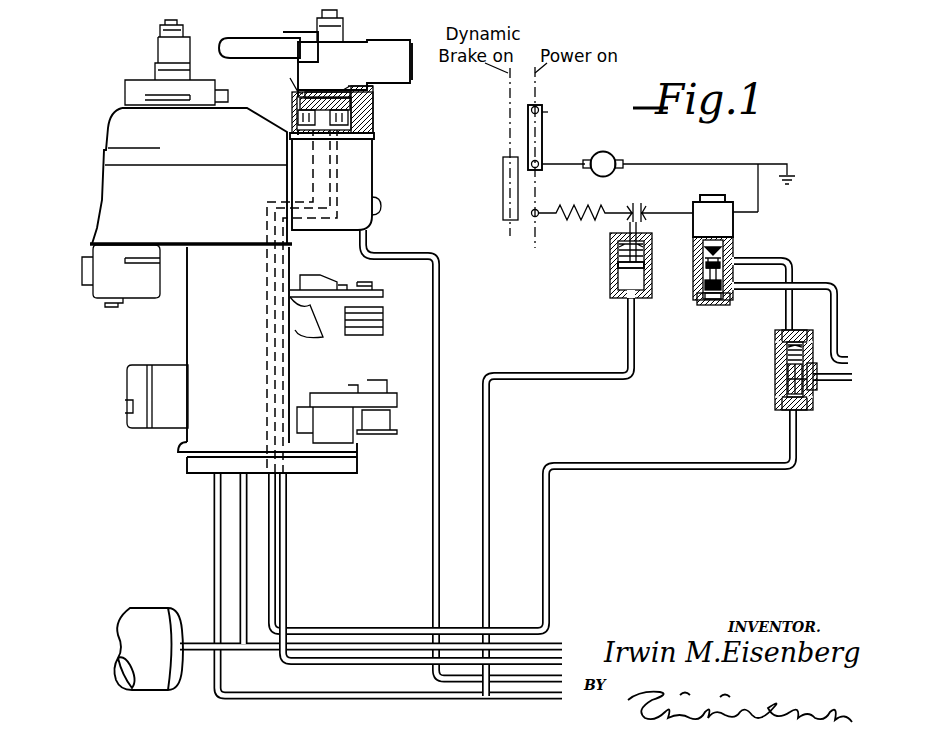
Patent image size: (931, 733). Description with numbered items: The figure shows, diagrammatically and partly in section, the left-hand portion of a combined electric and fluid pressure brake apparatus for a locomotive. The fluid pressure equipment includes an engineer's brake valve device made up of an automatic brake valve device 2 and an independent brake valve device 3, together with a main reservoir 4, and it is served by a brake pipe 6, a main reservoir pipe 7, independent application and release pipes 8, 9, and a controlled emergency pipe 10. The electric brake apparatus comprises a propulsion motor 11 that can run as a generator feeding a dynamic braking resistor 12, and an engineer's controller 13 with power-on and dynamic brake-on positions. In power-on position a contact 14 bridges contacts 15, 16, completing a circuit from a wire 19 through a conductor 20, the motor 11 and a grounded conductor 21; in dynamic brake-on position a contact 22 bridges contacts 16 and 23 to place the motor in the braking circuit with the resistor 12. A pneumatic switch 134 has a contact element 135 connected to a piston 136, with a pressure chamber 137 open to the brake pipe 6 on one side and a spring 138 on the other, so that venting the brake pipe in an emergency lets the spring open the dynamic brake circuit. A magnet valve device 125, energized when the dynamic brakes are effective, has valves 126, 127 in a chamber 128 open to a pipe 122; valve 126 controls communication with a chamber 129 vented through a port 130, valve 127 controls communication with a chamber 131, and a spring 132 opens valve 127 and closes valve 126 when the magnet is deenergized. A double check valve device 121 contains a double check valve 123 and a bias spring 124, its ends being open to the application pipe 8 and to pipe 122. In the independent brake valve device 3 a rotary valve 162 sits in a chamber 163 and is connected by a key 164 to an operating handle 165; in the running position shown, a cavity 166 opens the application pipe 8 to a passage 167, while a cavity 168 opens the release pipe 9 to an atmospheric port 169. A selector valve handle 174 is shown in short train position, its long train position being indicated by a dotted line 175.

The automatic brake valve device 2 is at (116, 120).
The independent brake valve device 3 is at (358, 40).
The main reservoir 4 is at (168, 612).
The brake pipe 6 is at (452, 699).
The main reservoir pipe 7 is at (355, 645).
The independent application pipe 8 is at (553, 630).
The independent release pipe 9 is at (560, 650).
The controlled emergency pipe 10 is at (523, 682).
The propulsion motor 11 is at (606, 152).
The dynamic braking resistor 12 is at (574, 211).
The engineer's controller 13 is at (519, 88).
The contact 14 is at (542, 130).
The contact 15 is at (541, 106).
The contact 16 is at (541, 170).
The wire 19 is at (548, 112).
The conductor 20 is at (563, 152).
The grounded conductor 21 is at (745, 163).
The contact 22 is at (503, 182).
The contact 23 is at (533, 220).
The double check valve device 121 is at (775, 368).
The pipe 122 is at (787, 319).
The double check valve 123 is at (782, 388).
The bias spring 124 is at (782, 352).
The magnet valve device 125 is at (728, 202).
The valve 126 is at (735, 274).
The valve 127 is at (790, 320).
The chamber 128 is at (703, 279).
The chamber 129 is at (735, 257).
The port 130 is at (703, 263).
The chamber 131 is at (703, 295).
The spring 132 is at (711, 301).
The pneumatic switch 134 is at (622, 284).
The contact element 135 is at (637, 208).
The piston 136 is at (618, 266).
The pressure chamber 137 is at (612, 295).
The spring 138 is at (610, 244).
The rotary valve 162 is at (374, 103).
The rotary valve chamber 163 is at (374, 120).
The key 164 is at (334, 92).
The operating handle 165 is at (252, 45).
The cavity 166 is at (297, 98).
The passage 167 is at (297, 120).
The cavity 168 is at (357, 91).
The atmospheric port 169 is at (374, 139).
The handle 174 is at (382, 212).
The dotted line 175 is at (372, 178).